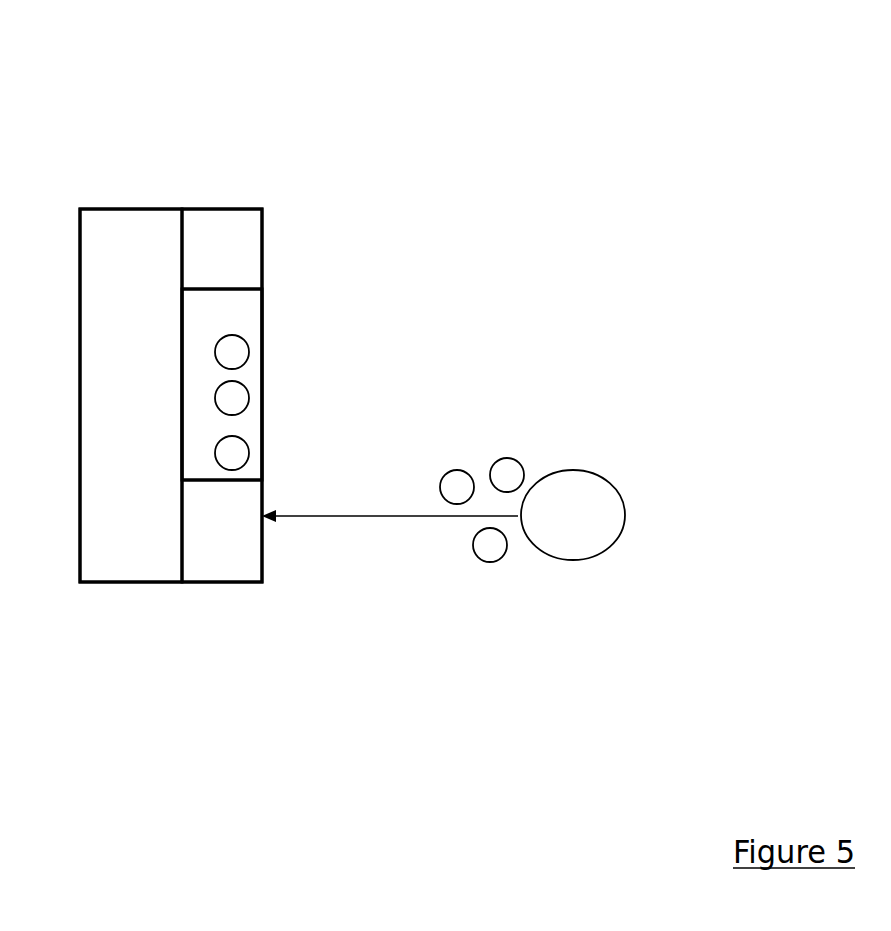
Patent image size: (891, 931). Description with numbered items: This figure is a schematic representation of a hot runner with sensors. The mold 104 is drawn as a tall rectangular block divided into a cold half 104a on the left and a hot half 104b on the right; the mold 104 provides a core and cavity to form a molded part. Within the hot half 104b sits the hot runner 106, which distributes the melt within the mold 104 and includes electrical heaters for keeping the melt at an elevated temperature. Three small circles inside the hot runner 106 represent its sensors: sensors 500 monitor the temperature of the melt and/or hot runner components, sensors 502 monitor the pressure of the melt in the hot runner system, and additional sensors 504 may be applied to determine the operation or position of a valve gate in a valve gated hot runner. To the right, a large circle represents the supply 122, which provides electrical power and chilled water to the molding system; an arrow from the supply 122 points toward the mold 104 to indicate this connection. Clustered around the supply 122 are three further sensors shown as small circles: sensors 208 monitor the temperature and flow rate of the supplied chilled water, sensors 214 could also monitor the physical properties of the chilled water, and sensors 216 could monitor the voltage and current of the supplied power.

The mold 104 is at (144, 188).
The cold half 104a is at (125, 548).
The hot half 104b is at (214, 548).
The hot runner 106 is at (215, 335).
The sensors 500 is at (245, 340).
The sensors 502 is at (245, 386).
The sensors 504 is at (245, 441).
The sensors 208 is at (501, 458).
The sensors 214 is at (440, 483).
The sensors 216 is at (473, 551).
The supply 122 is at (550, 552).